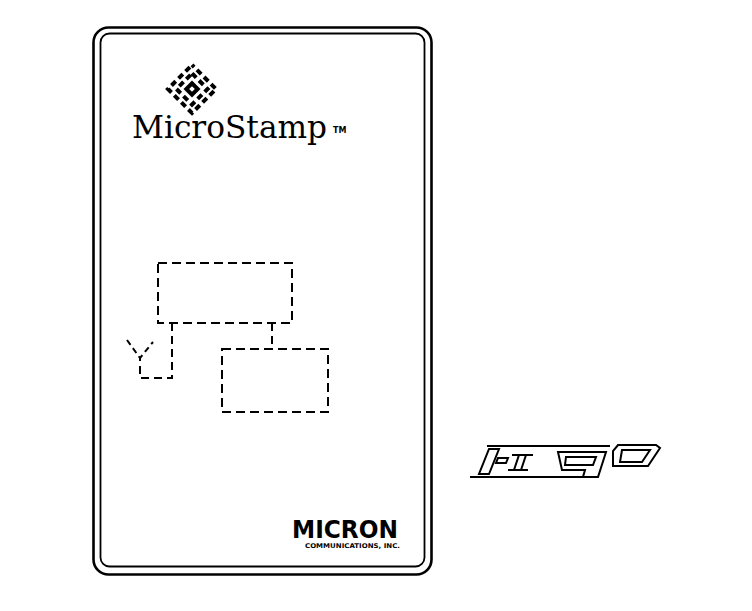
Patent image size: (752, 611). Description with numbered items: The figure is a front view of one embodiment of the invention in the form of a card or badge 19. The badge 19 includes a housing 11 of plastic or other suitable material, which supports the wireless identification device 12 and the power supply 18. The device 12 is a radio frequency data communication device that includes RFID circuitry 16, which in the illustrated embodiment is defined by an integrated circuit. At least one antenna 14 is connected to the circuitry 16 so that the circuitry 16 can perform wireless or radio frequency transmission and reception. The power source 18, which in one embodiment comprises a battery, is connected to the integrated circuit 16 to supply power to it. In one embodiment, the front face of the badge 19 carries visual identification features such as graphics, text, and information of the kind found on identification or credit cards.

The housing 11 is at (133, 503).
The wireless identification device 12 is at (360, 418).
The antenna 14 is at (131, 337).
The RFID circuitry 16 is at (198, 262).
The power source 18 is at (273, 413).
The card or badge 19 is at (390, 177).